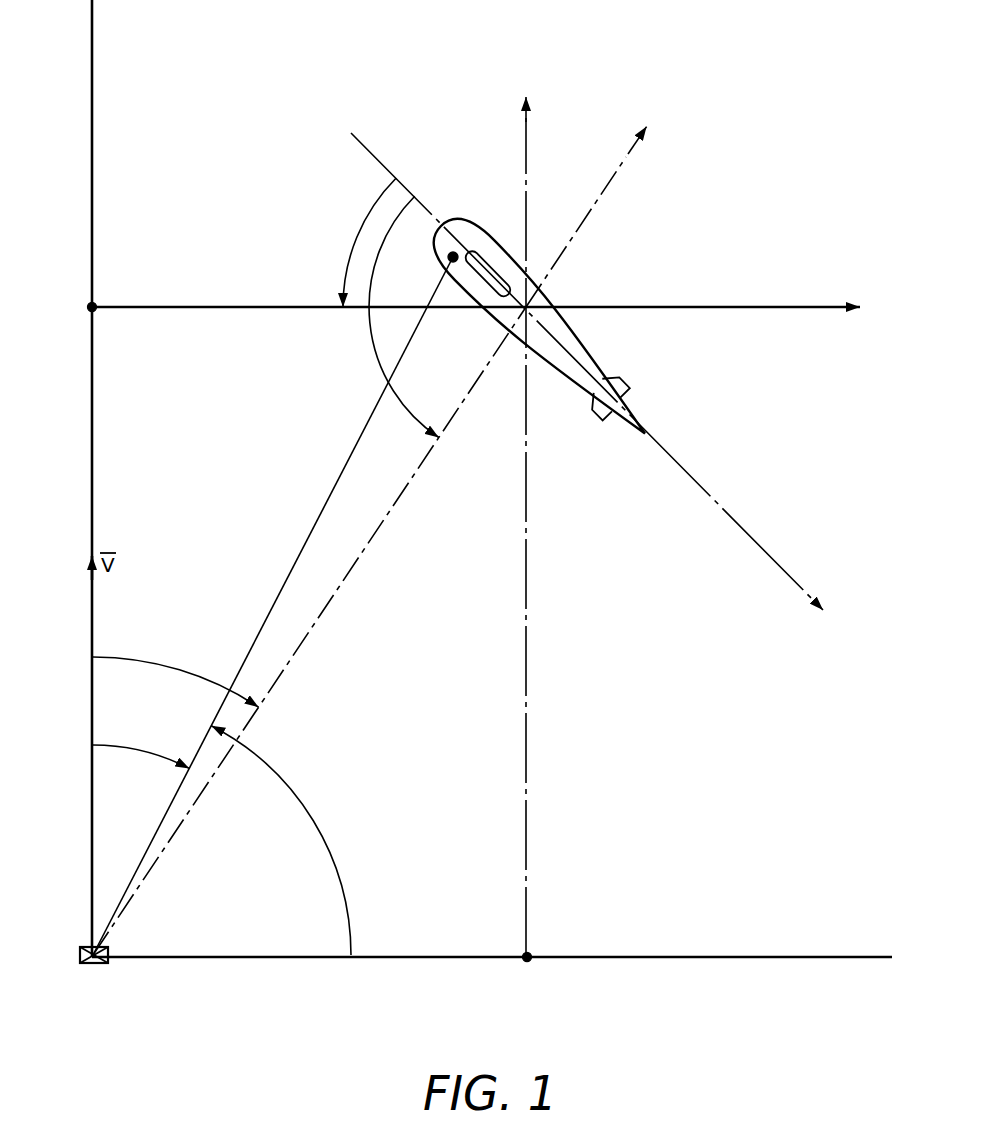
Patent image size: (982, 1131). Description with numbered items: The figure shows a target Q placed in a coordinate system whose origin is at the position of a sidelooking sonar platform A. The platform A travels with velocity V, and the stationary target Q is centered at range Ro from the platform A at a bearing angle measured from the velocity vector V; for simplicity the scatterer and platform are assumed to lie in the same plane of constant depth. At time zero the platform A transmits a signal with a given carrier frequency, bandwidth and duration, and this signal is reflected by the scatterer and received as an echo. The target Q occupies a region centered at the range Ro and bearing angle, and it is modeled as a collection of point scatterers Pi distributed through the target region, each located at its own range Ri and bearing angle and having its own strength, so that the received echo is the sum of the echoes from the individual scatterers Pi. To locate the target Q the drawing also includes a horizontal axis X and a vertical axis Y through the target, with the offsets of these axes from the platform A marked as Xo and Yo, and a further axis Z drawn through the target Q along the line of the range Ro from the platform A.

The sidelooking sonar platform A is at (83, 951).
The target Q is at (548, 300).
The point scatterer Pi is at (449, 258).
The range of point scatterer Ri is at (273, 606).
The range to target center Ro is at (309, 631).
The platform velocity vector V is at (596, 382).
The target Z axis Z is at (594, 205).
The X axis X is at (890, 644).
The Y axis Y is at (524, 85).
The target X coordinate Xo is at (525, 547).
The target Y coordinate Yo is at (456, 299).